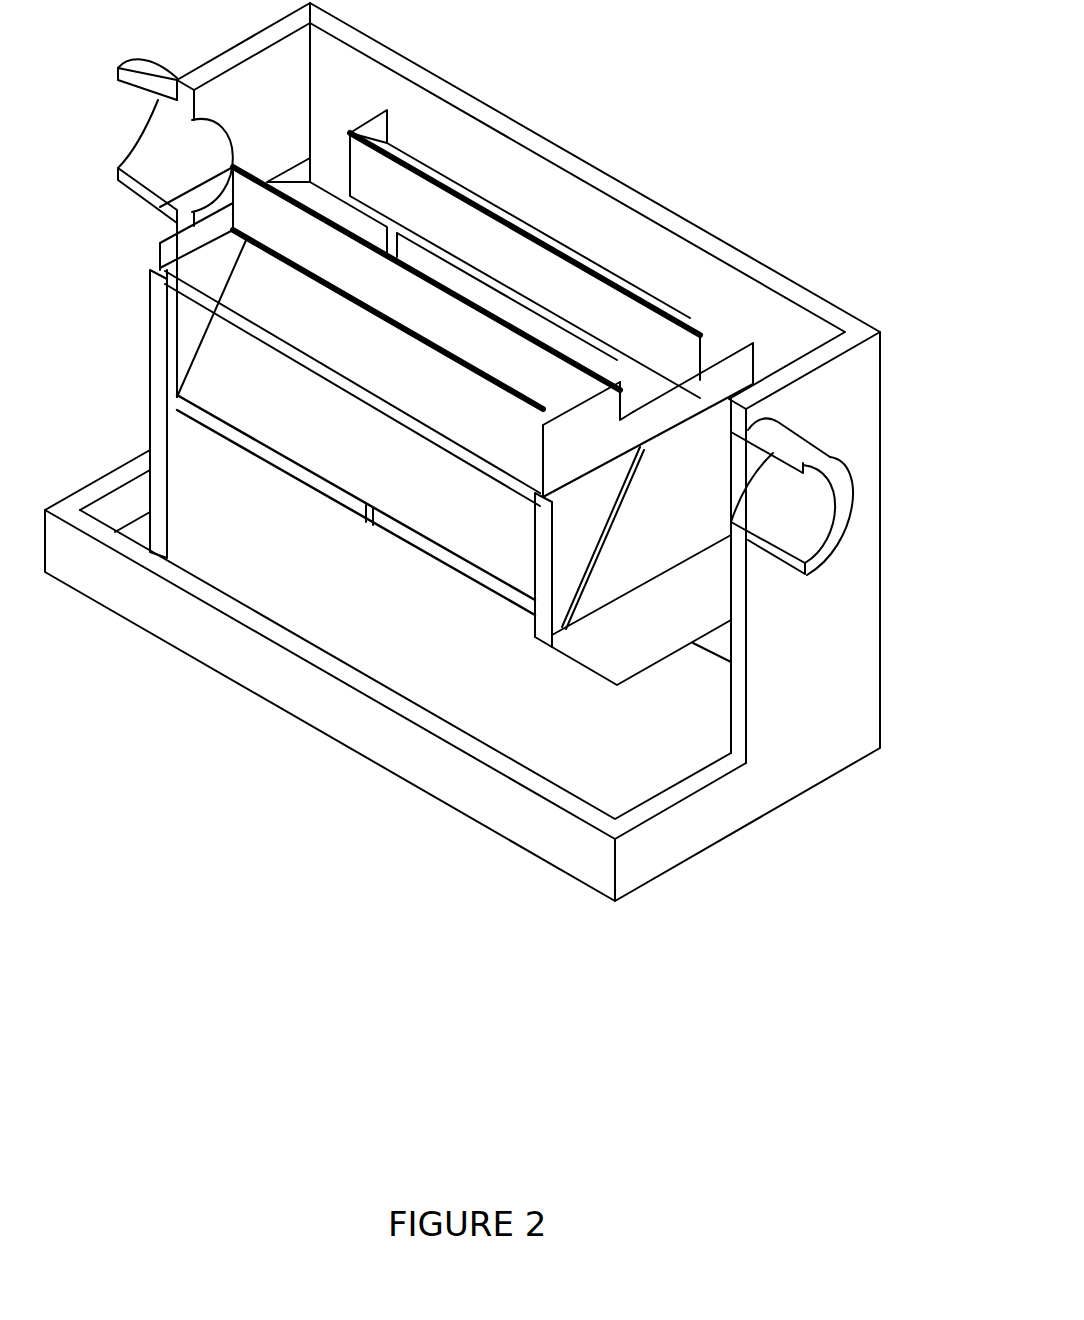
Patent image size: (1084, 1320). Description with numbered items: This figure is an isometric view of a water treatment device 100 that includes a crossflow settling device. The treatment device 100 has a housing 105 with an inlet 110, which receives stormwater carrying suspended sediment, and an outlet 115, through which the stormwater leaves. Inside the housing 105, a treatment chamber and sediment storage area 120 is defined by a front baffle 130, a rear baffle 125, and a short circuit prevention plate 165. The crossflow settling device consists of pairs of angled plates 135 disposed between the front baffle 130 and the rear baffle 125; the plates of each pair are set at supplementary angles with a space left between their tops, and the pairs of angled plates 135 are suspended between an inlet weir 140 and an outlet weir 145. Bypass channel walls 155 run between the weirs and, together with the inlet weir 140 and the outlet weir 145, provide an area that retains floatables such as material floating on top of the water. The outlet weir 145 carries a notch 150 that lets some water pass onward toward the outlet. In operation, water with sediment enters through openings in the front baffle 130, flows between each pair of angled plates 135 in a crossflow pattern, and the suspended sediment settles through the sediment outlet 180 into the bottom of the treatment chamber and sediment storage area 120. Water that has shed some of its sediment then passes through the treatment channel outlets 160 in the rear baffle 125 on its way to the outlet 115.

The treatment device 100 is at (862, 968).
The housing 105 is at (462, 452).
The inlet 110 is at (150, 160).
The outlet 115 is at (808, 514).
The treatment chamber and sediment storage area 120 is at (351, 462).
The rear baffle 125 is at (614, 565).
The front baffle 130 is at (189, 414).
The angled plates 135 is at (352, 426).
The inlet weir 140 is at (157, 252).
The outlet weir 145 is at (667, 345).
The notch 150 is at (660, 383).
The bypass channel walls 155 is at (466, 259).
The treatment channel outlets 160 is at (733, 507).
The short circuit prevention plate 165 is at (641, 610).
The sediment outlet 180 is at (317, 484).